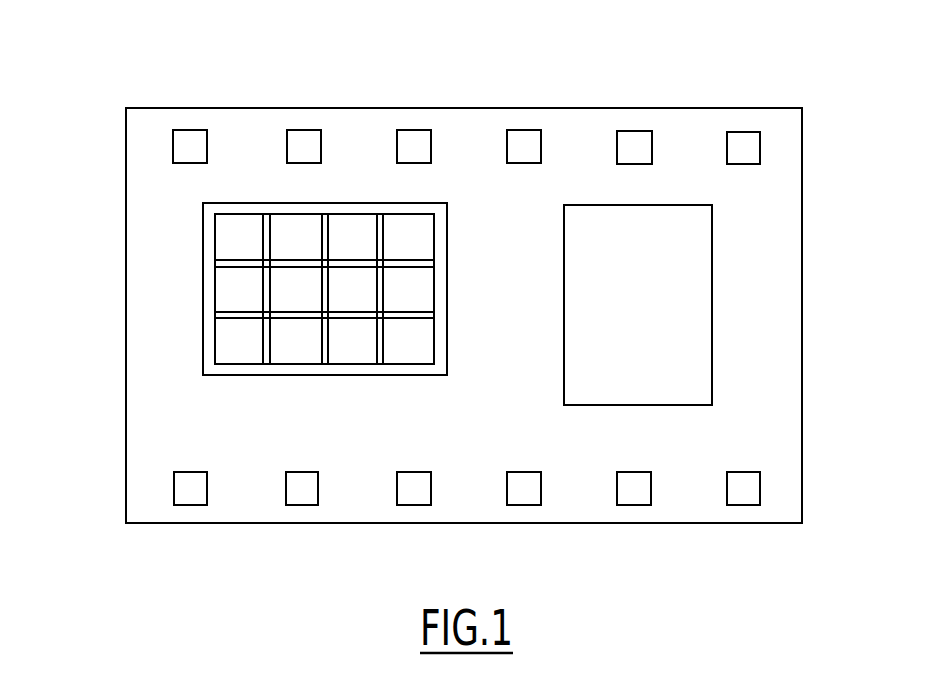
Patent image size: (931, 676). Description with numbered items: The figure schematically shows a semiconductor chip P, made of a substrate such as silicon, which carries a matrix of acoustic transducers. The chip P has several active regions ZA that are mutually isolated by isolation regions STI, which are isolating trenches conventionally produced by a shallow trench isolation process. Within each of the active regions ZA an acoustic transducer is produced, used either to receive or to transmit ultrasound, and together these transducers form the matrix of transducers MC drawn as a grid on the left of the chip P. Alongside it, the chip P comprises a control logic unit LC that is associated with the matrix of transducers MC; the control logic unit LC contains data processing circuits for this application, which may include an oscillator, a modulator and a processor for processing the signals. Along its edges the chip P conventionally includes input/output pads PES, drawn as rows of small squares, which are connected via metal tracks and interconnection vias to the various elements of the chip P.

The semiconductor chip P is at (647, 83).
The matrix of transducers MC is at (192, 372).
The isolation regions STI is at (382, 243).
The active regions ZA is at (410, 297).
The control logic unit LC is at (638, 305).
The input/output pads PES is at (304, 493).